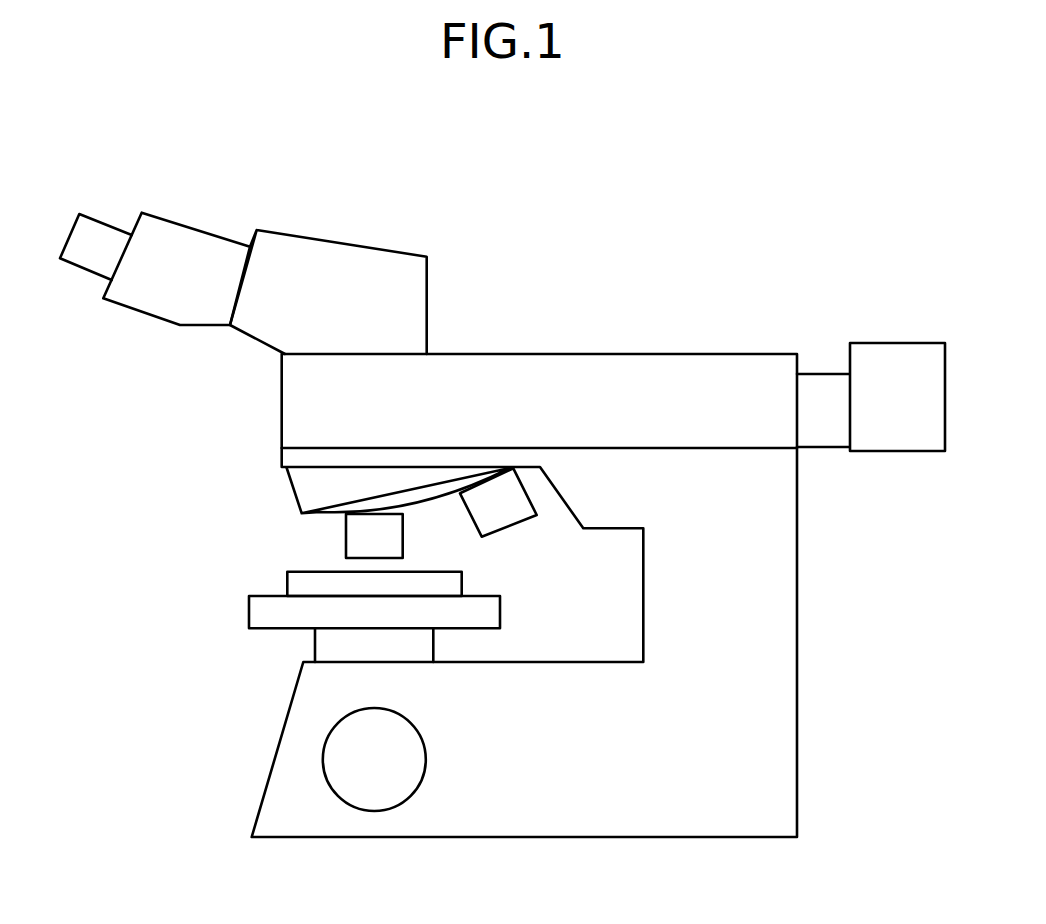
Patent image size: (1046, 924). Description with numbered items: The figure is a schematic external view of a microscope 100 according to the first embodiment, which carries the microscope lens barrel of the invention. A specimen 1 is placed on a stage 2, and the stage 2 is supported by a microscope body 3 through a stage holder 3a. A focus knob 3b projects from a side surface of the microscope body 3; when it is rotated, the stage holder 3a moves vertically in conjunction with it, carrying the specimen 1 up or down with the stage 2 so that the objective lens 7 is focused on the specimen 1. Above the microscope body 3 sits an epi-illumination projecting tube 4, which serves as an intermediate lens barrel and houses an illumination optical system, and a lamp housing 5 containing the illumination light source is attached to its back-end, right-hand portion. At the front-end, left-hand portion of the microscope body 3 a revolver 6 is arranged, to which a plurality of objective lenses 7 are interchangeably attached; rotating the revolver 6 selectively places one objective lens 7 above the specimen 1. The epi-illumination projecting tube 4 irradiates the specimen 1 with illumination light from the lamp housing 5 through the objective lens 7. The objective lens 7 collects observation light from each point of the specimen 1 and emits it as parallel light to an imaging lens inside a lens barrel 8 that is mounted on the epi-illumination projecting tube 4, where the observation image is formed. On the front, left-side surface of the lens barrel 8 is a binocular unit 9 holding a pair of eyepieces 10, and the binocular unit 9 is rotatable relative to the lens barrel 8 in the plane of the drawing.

The microscope 100 is at (493, 217).
The specimen 1 is at (287, 575).
The stage 2 is at (249, 610).
The microscope body 3 is at (797, 588).
The stage holder 3a is at (315, 644).
The focus knob 3b is at (322, 758).
The epi-illumination projecting tube 4 is at (737, 354).
The lamp housing 5 is at (917, 343).
The revolver 6 is at (297, 499).
The objective lens 7 is at (403, 546).
The lens barrel 8 is at (290, 232).
The binocular unit 9 is at (195, 227).
The eyepiece 10 is at (103, 220).